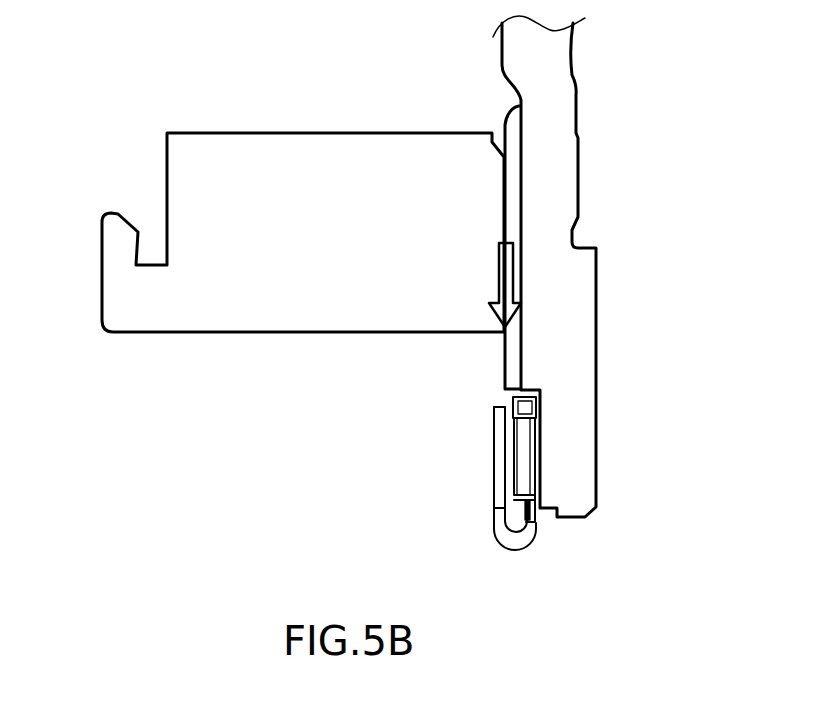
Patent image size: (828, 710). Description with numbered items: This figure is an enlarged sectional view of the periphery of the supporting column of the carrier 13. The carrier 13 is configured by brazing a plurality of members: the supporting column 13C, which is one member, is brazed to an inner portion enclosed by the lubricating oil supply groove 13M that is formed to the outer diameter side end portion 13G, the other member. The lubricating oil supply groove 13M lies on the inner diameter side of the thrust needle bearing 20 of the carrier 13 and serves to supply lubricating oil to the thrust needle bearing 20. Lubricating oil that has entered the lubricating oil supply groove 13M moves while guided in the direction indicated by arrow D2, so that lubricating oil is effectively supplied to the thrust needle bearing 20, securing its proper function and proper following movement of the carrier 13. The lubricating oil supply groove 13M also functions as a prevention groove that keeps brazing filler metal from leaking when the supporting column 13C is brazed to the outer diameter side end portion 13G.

The carrier 13 is at (368, 324).
The supporting column 13C is at (343, 185).
The lubricating oil supply groove 13M is at (512, 222).
The outer diameter side end portion 13G is at (574, 495).
The thrust needle bearing 20 is at (502, 455).
The arrow D2 is at (484, 285).